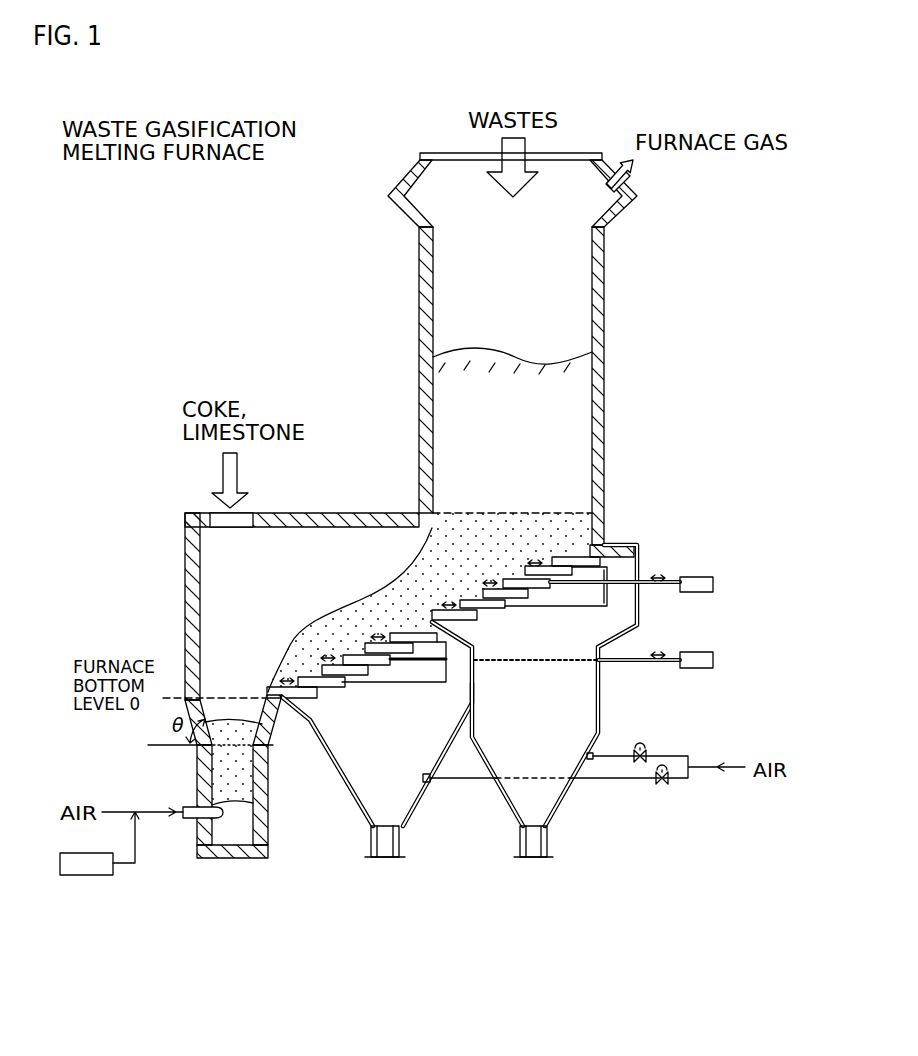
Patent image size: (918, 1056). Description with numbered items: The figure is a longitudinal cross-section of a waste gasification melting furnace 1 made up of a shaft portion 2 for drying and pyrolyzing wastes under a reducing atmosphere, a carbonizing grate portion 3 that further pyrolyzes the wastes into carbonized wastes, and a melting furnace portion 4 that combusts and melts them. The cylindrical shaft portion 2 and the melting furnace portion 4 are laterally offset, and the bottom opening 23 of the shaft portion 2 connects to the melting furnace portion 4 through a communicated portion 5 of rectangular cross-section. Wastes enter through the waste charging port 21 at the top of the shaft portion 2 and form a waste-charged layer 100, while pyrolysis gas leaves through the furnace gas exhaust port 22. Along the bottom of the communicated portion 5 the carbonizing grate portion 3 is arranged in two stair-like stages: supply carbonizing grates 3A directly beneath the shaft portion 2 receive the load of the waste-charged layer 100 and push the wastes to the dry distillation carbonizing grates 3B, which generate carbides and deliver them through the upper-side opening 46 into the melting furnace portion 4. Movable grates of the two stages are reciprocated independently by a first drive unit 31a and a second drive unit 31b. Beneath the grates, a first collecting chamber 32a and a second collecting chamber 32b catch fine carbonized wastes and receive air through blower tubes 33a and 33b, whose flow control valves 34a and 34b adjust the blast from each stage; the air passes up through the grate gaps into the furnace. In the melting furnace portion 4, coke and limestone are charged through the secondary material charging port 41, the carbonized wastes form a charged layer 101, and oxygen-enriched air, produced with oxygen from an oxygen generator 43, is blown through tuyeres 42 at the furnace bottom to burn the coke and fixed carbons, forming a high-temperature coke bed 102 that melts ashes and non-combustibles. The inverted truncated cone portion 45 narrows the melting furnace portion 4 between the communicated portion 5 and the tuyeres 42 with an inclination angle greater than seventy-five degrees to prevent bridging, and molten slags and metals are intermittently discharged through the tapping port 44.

The waste gasification melting furnace 1 is at (198, 219).
The shaft portion 2 is at (598, 283).
The carbonizing grate portion 3 is at (382, 392).
The supply carbonizing grates 3A is at (497, 557).
The dry distillation carbonizing grates 3B is at (365, 624).
The melting furnace portion 4 is at (197, 768).
The communicated portion 5 is at (315, 513).
The waste charging port 21 is at (470, 160).
The furnace gas exhaust port 22 is at (618, 181).
The opening 23 is at (551, 511).
The first drive unit 31a is at (692, 575).
The second drive unit 31b is at (692, 650).
The first collecting chamber 32a is at (537, 790).
The second collecting chamber 32b is at (387, 790).
The blower tube 33a is at (675, 753).
The blower tube 33b is at (617, 780).
The flow control valve 34a is at (641, 746).
The flow control valve 34b is at (663, 785).
The secondary material charging port 41 is at (222, 515).
The tuyeres 42 is at (188, 808).
The oxygen generator 43 is at (90, 875).
The tapping port 44 is at (262, 847).
The inverted truncated cone portion 45 is at (186, 712).
The upper-side opening 46 is at (216, 689).
The waste-charged layer 100 is at (547, 387).
The charged layer of carbonized wastes 101 is at (235, 758).
The coke bed 102 is at (237, 827).